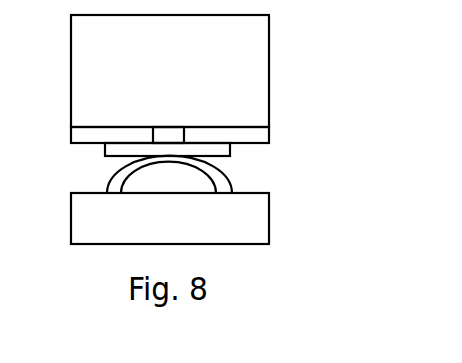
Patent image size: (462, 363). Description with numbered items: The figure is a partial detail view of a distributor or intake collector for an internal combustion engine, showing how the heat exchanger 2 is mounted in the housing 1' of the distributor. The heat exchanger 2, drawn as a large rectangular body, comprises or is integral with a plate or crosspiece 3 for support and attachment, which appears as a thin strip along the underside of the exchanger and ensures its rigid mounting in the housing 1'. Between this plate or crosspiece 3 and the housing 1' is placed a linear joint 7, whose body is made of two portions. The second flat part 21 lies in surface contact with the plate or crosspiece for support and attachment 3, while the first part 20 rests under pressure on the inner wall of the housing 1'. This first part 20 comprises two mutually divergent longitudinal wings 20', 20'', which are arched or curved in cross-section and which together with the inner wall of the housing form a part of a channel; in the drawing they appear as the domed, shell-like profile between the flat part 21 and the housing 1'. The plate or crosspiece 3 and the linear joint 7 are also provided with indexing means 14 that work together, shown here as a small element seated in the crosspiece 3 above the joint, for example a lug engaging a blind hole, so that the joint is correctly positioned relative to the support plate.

The heat exchanger 2 is at (257, 47).
The plate or crosspiece for support and attachment 3 is at (277, 128).
The indexing means 14 is at (183, 128).
The linear joint 7 is at (268, 158).
The second flat part 21 is at (222, 150).
The first part 20 is at (239, 175).
The longitudinal wing 20' is at (207, 172).
The longitudinal wing 20'' is at (218, 185).
The housing 1' is at (197, 218).